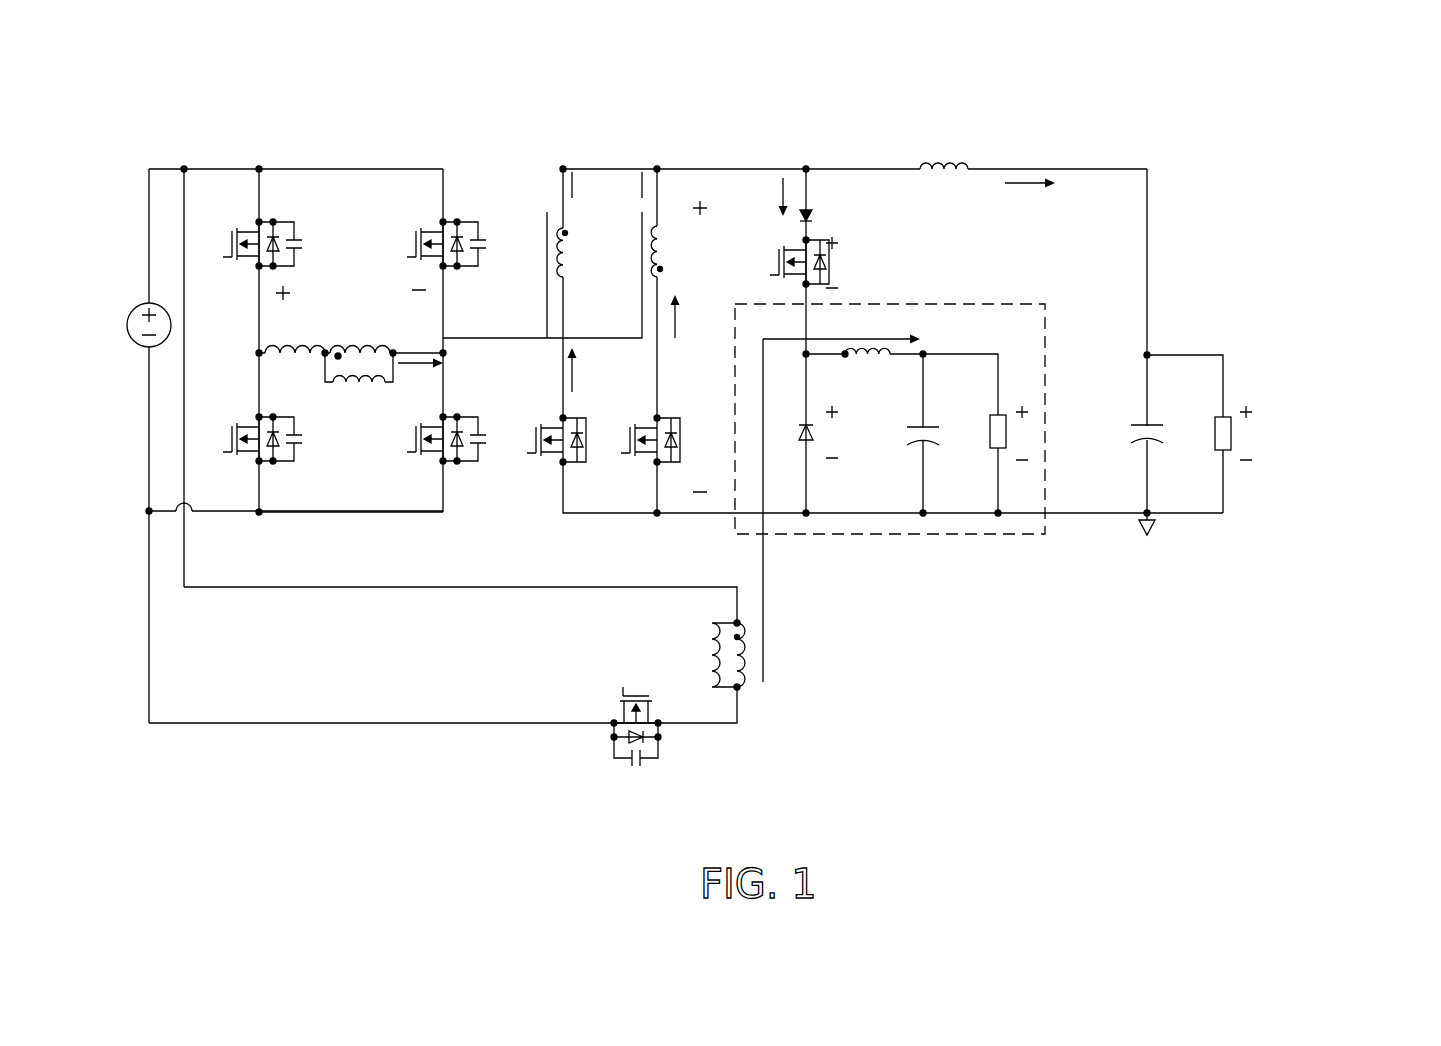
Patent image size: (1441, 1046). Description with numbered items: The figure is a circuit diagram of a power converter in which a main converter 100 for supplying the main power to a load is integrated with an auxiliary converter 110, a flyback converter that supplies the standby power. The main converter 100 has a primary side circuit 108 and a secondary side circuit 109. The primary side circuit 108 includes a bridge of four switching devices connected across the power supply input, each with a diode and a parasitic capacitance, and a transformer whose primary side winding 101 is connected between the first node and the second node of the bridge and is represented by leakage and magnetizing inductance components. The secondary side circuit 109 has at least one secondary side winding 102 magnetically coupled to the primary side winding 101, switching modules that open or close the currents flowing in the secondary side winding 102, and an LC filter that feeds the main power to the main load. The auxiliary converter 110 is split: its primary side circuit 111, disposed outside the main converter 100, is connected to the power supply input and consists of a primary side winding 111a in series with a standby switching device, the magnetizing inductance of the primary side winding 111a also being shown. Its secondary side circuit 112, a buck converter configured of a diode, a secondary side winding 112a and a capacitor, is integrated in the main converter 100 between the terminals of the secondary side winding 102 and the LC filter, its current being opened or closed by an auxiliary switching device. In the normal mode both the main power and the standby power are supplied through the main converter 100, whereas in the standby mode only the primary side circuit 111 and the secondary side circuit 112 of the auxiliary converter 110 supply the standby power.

The main converter 100 is at (1322, 170).
The primary side winding 101 is at (410, 415).
The secondary side winding 102 is at (642, 172).
The primary side circuit 108 is at (343, 128).
The secondary side circuit 109 is at (896, 125).
The auxiliary converter 110 is at (1322, 530).
The primary side circuit 111 is at (797, 732).
The primary side winding 111a is at (708, 613).
The secondary side circuit 112 is at (1045, 534).
The secondary side winding 112a is at (918, 378).